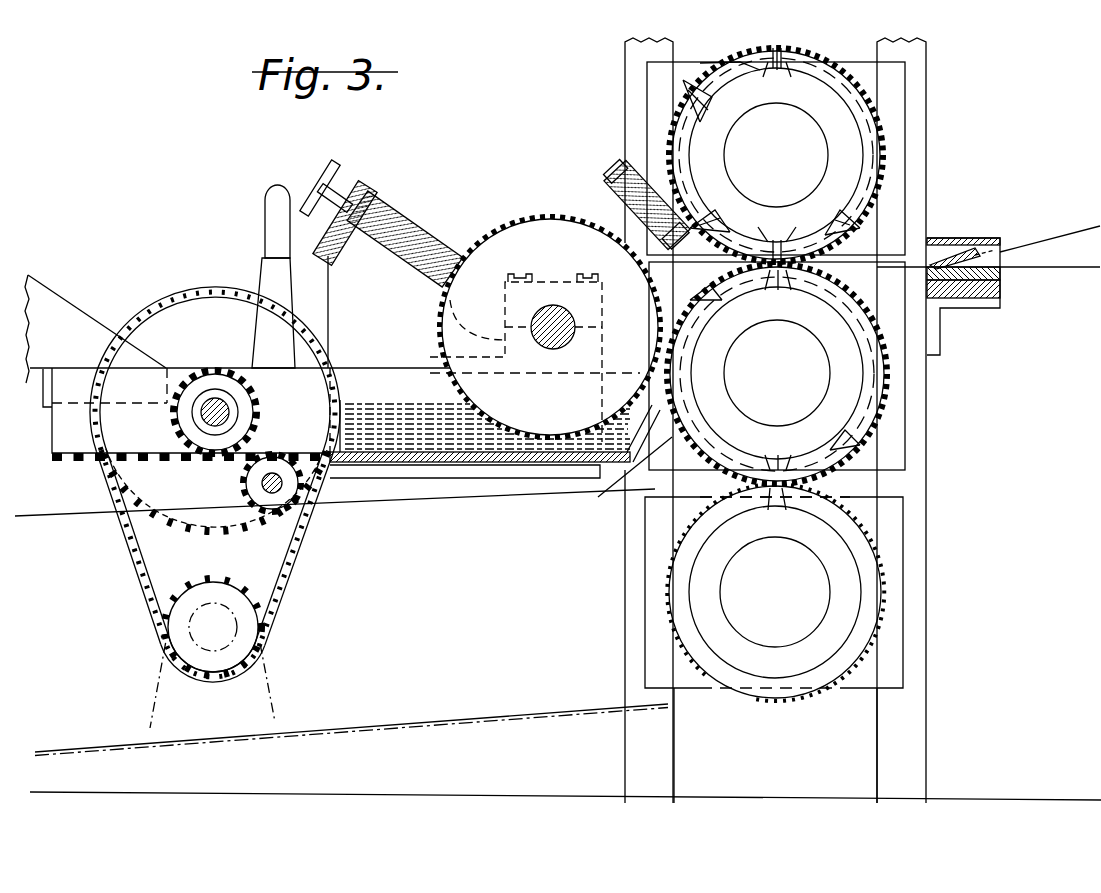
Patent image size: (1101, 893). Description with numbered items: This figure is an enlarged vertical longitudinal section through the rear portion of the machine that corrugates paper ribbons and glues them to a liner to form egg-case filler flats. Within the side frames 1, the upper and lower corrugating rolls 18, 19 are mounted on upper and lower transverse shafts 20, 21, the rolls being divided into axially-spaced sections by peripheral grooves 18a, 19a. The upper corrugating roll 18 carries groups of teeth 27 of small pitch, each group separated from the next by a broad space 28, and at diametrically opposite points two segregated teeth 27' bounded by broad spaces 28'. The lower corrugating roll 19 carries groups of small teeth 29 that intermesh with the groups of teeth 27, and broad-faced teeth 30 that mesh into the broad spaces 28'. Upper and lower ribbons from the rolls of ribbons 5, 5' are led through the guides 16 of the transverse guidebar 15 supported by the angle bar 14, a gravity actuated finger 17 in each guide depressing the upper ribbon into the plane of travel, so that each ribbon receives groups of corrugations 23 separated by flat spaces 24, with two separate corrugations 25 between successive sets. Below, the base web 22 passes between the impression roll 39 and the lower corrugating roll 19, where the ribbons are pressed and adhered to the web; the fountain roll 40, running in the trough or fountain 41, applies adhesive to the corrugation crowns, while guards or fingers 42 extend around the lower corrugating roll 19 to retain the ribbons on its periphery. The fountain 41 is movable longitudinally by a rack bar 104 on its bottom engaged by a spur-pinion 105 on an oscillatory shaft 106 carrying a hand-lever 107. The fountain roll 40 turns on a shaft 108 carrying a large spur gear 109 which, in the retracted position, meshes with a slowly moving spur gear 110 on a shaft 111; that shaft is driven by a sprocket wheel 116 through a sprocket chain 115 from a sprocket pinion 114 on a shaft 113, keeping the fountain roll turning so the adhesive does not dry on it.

The side frames 1 is at (565, 782).
The rolls of ribbons 5 is at (567, 483).
The lower rolls of ribbons 5' is at (988, 293).
The angle bar 14 is at (940, 348).
The transverse guidebar 15 is at (1000, 290).
The guides 16 is at (978, 252).
The gravity actuated pawl or finger 17 is at (955, 238).
The upper corrugating roll 18 is at (865, 160).
The peripheral grooves 18a is at (690, 132).
The lower corrugating roll 19 is at (885, 430).
The peripheral grooves 19a is at (870, 352).
The upper transverse shaft 20 is at (776, 155).
The lower transverse shaft 21 is at (777, 373).
The base web 22 is at (482, 498).
The groups of corrugations 23 is at (875, 595).
The flat spaces 24 is at (855, 680).
The separate corrugations 25 is at (710, 740).
The groups of teeth 27 is at (778, 158).
The segregated teeth 27' is at (800, 150).
The broad space 28 is at (777, 144).
The broad spaces 28' is at (760, 152).
The groups of small teeth 29 is at (718, 280).
The broad-faced teeth 30 is at (940, 398).
The impression roll 39 is at (688, 611).
The fountain roll 40 is at (550, 327).
The trough or fountain 41 is at (410, 463).
The guards or fingers 42 is at (623, 478).
The rack bar 104 is at (70, 460).
The spur-pinion 105 is at (262, 485).
The oscillatory shaft 106 is at (300, 518).
The hand-lever 107 is at (265, 227).
The shaft 108 is at (530, 320).
The large spur gear 109 is at (500, 223).
The slowly moving spur gear 110 is at (215, 368).
The shaft 111 is at (200, 410).
The shaft 113 is at (213, 640).
The sprocket pinion 114 is at (248, 594).
The sprocket chain 115 is at (120, 545).
The sprocket wheel 116 is at (183, 530).